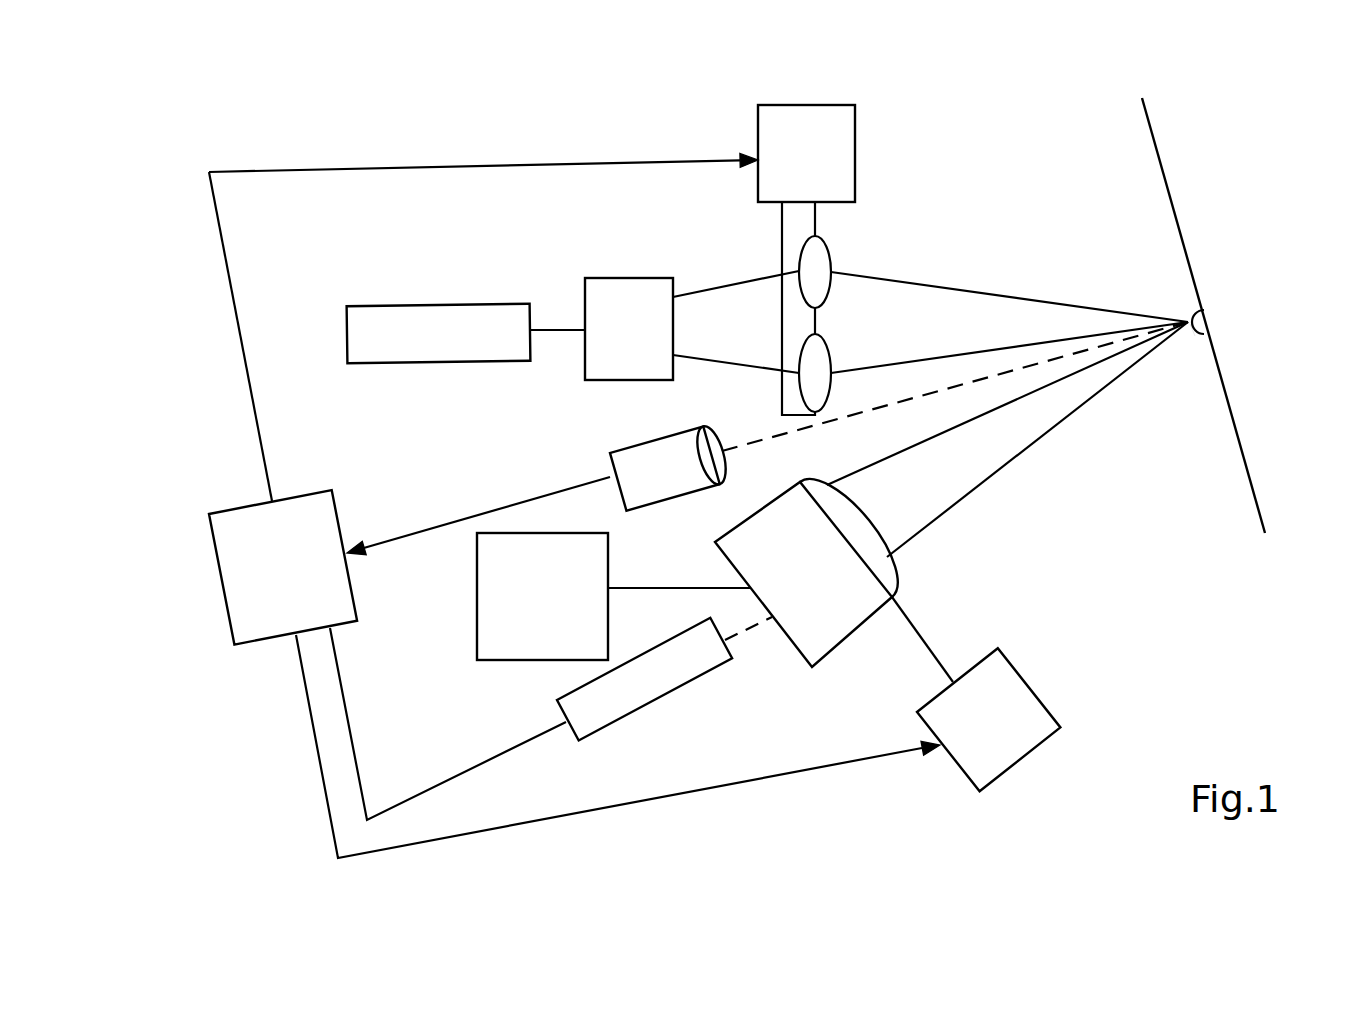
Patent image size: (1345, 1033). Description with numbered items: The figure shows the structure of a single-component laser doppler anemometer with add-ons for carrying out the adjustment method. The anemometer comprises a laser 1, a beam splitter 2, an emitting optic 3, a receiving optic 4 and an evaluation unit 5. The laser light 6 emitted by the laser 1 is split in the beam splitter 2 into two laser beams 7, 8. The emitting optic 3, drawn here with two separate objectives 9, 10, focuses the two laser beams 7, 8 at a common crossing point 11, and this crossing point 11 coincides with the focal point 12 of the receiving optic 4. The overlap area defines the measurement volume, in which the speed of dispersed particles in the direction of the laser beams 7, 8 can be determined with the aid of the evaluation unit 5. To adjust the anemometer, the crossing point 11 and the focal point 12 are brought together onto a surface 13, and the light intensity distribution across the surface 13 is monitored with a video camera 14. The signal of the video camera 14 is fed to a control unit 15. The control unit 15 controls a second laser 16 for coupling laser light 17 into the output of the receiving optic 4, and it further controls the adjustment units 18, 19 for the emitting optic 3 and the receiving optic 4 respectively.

The laser 1 is at (467, 360).
The beam splitter 2 is at (585, 367).
The emitting optic 3 is at (805, 306).
The receiving optic 4 is at (840, 648).
The evaluation unit 5 is at (477, 591).
The laser light 6 is at (553, 330).
The laser beam 7 is at (694, 290).
The laser beam 8 is at (723, 368).
The objective 9 is at (798, 257).
The objective 10 is at (831, 388).
The crossing point 11 is at (1195, 336).
The focal point 12 is at (1189, 307).
The surface 13 is at (1253, 478).
The video camera 14 is at (670, 500).
The control unit 15 is at (253, 645).
The laser 16 is at (658, 703).
The laser light 17 is at (745, 630).
The adjustment unit 18 is at (797, 105).
The adjustment unit 19 is at (1040, 697).